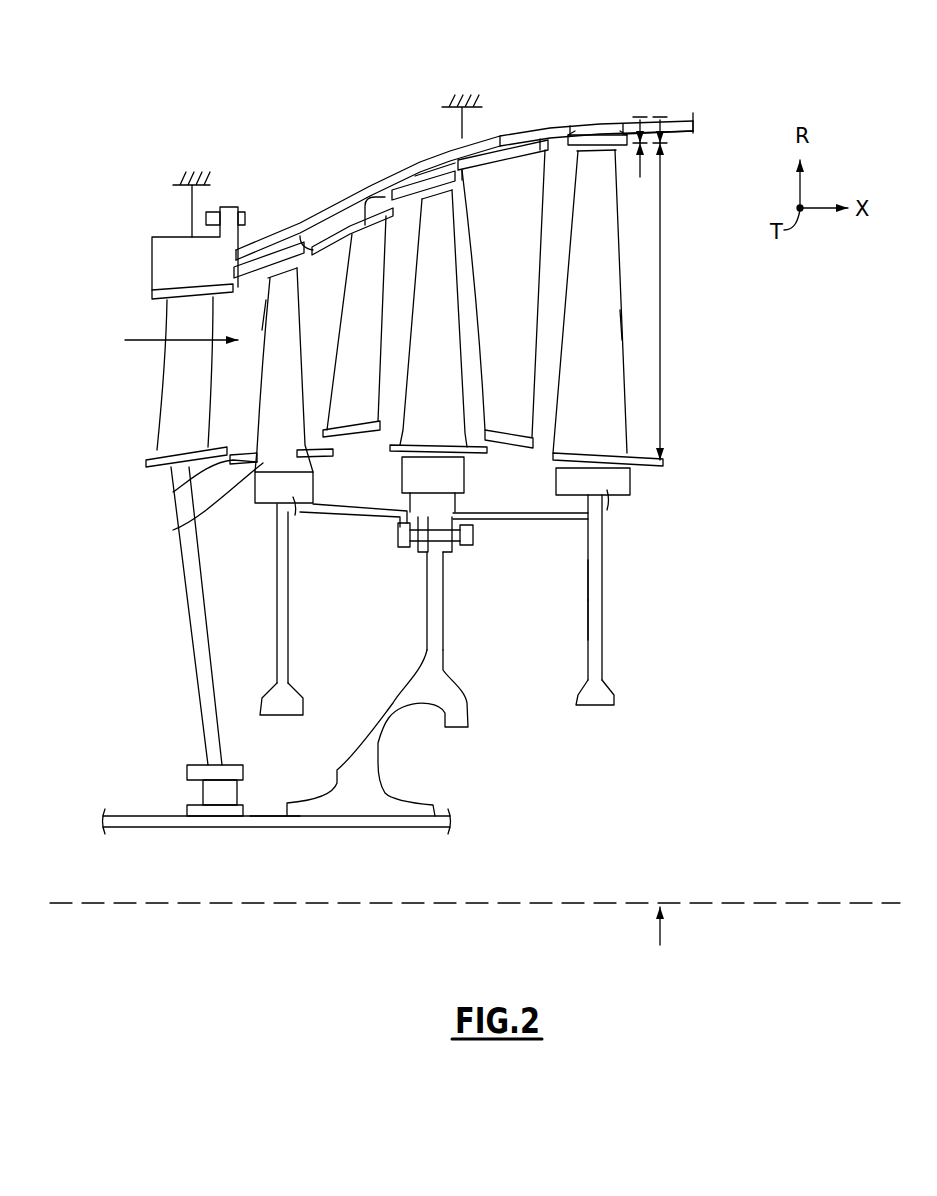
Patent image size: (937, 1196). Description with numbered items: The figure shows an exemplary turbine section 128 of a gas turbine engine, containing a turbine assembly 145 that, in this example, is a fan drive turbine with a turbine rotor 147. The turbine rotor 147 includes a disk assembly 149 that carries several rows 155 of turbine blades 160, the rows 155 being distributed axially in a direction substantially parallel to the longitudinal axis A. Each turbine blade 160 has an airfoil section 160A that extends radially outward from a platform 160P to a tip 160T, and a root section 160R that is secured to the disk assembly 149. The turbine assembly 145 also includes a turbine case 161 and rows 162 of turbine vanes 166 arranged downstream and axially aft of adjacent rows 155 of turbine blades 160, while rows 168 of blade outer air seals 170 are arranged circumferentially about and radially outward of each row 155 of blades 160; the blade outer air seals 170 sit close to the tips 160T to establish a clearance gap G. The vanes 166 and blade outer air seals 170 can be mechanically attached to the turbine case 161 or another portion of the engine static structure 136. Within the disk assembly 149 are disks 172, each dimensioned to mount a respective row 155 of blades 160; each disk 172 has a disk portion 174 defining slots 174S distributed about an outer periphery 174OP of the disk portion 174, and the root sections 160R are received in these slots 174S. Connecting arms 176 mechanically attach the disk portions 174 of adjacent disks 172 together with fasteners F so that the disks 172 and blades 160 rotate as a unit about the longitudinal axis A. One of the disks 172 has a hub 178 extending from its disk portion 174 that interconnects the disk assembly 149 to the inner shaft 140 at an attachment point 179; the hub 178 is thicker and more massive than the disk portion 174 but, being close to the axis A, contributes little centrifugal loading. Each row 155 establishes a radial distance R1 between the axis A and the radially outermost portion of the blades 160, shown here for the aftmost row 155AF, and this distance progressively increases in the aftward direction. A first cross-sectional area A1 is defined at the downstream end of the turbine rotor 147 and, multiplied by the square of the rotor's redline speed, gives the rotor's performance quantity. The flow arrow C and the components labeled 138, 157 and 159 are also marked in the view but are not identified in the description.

The turbine section 128 is at (104, 128).
The engine static structure 136 is at (190, 174).
The bearing system 138 is at (195, 758).
The inner shaft 140 is at (140, 823).
The turbine assembly 145 is at (222, 106).
The turbine rotor 147 is at (715, 140).
The disk assembly 149 is at (602, 587).
The rows of turbine blades 155 is at (258, 291).
The aftmost row of turbine blades 155AF is at (648, 198).
The forward vane support 157 is at (155, 233).
The vane 159 is at (172, 412).
The turbine blade 160 is at (283, 362).
The tip 160T is at (266, 272).
The airfoil section 160A is at (293, 413).
The platform 160P is at (173, 492).
The root section 160R is at (262, 505).
The turbine case 161 is at (522, 110).
The rows of turbine vanes 162 is at (341, 165).
The turbine vane 166 is at (342, 272).
The rows of blade outer air seals 168 is at (290, 162).
The blade outer air seal 170 is at (281, 258).
The disk 172 is at (283, 623).
The disk portion 174 is at (283, 600).
The outer periphery 174OP is at (173, 530).
The slot 174S is at (295, 495).
The connecting arm 176 is at (369, 520).
The hub 178 is at (383, 777).
The attachment point 179 is at (374, 840).
The longitudinal axis A is at (850, 903).
The first cross-sectional area A1 is at (661, 257).
The core flow C is at (124, 340).
The fastener F is at (393, 530).
The clearance gap G is at (643, 113).
The radial distance R1 is at (663, 115).